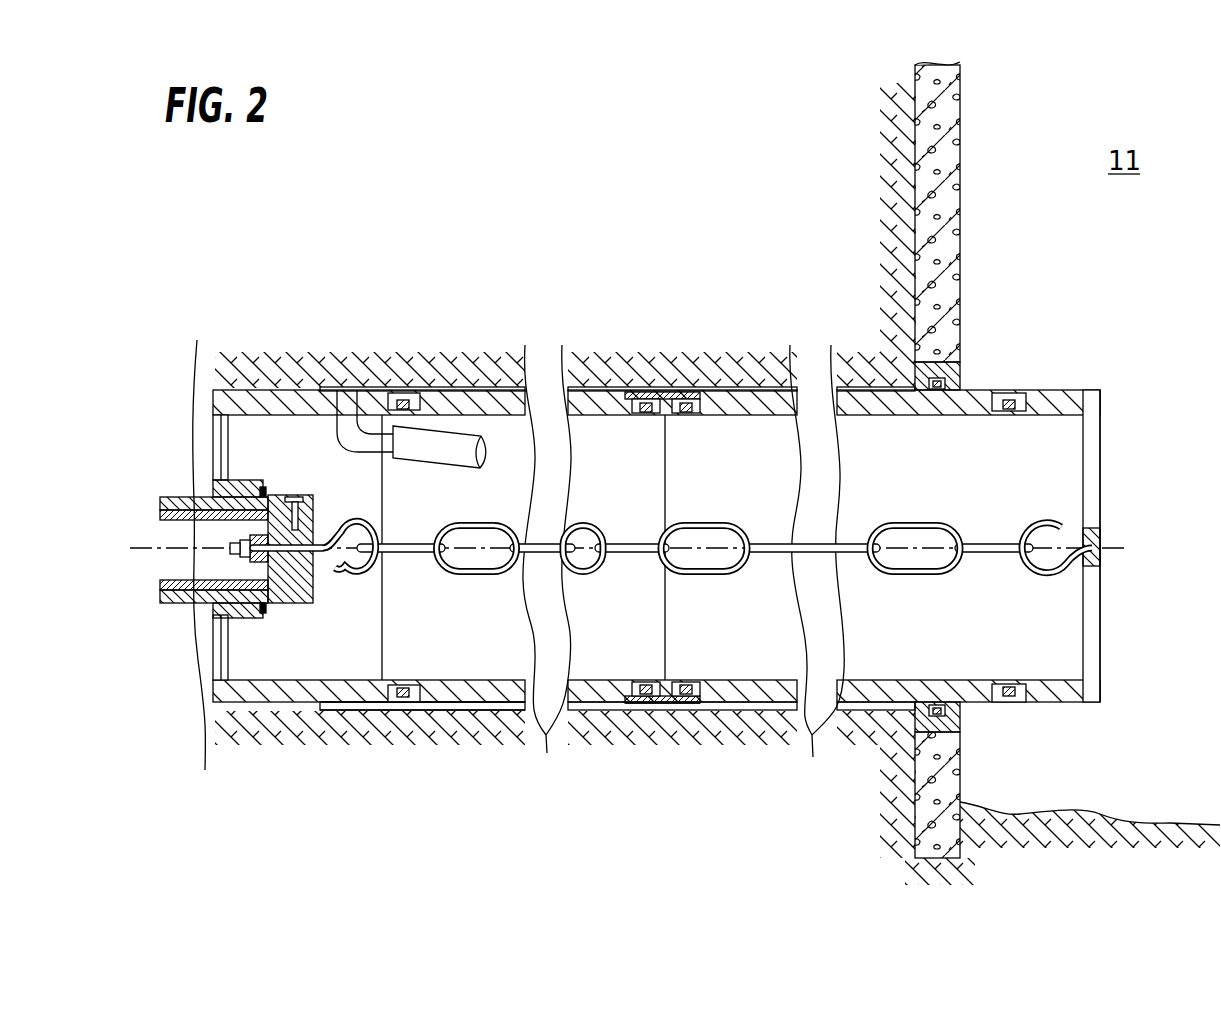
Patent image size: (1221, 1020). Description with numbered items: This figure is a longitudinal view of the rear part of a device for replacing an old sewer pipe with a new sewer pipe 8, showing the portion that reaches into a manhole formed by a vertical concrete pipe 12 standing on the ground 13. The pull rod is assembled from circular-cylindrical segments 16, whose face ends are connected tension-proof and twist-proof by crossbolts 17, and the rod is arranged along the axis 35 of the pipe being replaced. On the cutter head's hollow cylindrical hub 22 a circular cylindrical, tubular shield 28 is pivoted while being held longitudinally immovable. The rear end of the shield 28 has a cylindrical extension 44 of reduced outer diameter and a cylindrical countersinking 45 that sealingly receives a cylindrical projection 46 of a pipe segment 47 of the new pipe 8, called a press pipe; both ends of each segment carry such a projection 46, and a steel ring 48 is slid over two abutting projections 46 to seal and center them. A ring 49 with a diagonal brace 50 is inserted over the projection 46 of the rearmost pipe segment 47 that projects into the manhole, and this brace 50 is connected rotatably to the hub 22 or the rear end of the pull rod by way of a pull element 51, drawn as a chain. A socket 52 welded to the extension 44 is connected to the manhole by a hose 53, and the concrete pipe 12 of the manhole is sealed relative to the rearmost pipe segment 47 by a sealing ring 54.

The new sewer pipe 8 is at (645, 388).
The vertical concrete pipe 12 is at (950, 228).
The ground surface 13 is at (1195, 820).
The segment 16 is at (165, 520).
The crossbolt 17 is at (297, 500).
The hollow cylindrical hub 22 is at (172, 500).
The tubular shield 28 is at (248, 685).
The axis of the pipe 35 is at (147, 548).
The cylindrical extension 44 is at (347, 690).
The cylindrical countersinking 45 is at (402, 700).
The cylindrical projection 46 is at (412, 680).
The pipe segment 47 is at (519, 564).
The steel ring 48 is at (670, 705).
The ring 49 is at (1068, 703).
The diagonal brace 50 is at (1090, 629).
The pull element 51 is at (705, 518).
The socket 52 is at (362, 438).
The hose 53 is at (449, 445).
The sealing ring 54 is at (960, 720).